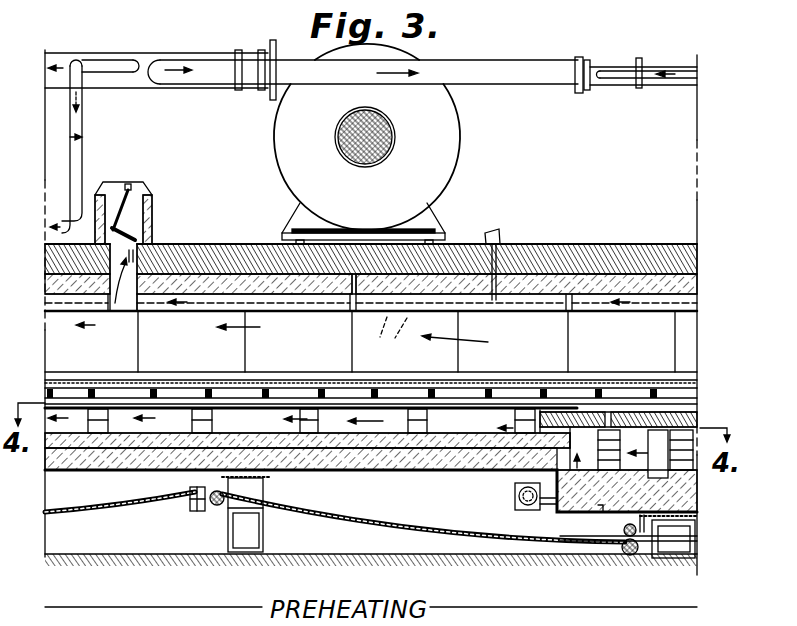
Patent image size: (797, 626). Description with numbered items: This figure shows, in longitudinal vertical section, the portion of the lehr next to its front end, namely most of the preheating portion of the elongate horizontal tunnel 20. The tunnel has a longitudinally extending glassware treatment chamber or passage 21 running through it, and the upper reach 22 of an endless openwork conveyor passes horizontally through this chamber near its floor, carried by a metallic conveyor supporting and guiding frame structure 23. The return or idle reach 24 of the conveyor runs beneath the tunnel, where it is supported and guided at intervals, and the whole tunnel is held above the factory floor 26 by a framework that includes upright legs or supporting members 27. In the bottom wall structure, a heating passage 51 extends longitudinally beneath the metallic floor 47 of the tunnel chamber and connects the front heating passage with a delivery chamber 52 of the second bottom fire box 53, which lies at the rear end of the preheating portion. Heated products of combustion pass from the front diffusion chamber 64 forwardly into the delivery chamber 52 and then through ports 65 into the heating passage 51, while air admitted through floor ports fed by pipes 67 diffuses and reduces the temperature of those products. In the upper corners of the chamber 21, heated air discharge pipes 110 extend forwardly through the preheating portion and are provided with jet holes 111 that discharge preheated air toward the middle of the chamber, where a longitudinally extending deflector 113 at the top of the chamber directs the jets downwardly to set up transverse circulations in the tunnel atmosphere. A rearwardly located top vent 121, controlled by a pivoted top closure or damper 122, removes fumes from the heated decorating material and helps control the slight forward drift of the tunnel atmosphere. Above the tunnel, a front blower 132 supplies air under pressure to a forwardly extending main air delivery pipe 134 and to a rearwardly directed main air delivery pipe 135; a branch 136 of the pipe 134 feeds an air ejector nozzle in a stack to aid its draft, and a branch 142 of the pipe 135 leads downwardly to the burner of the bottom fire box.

The main air delivery pipe 134 is at (147, 53).
The main air delivery pipe 135 is at (490, 72).
The branch 142 is at (608, 77).
The front blower 132 is at (440, 137).
The tunnel 20 is at (526, 245).
The branch 136 is at (77, 152).
The top closure or damper 122 is at (152, 241).
The top vent 121 is at (143, 238).
The heated air discharge pipes 110 is at (130, 308).
The deflector 113 is at (627, 313).
The glassware treatment chamber or passage 21 is at (375, 341).
The jet holes 111 is at (393, 334).
The upper reach 22 is at (177, 381).
The conveyor supporting and guiding frame structure 23 is at (292, 385).
The floor 47 is at (412, 385).
The heating passage 51 is at (443, 434).
The front diffusion chamber 64 is at (695, 470).
The ports 65 is at (519, 477).
The pipes 67 is at (541, 505).
The return or idle reach 24 is at (322, 515).
The upright legs or supporting members 27 is at (237, 528).
The delivery chamber 52 is at (593, 502).
The bottom fire box 53 is at (627, 504).
The factory floor 26 is at (398, 553).